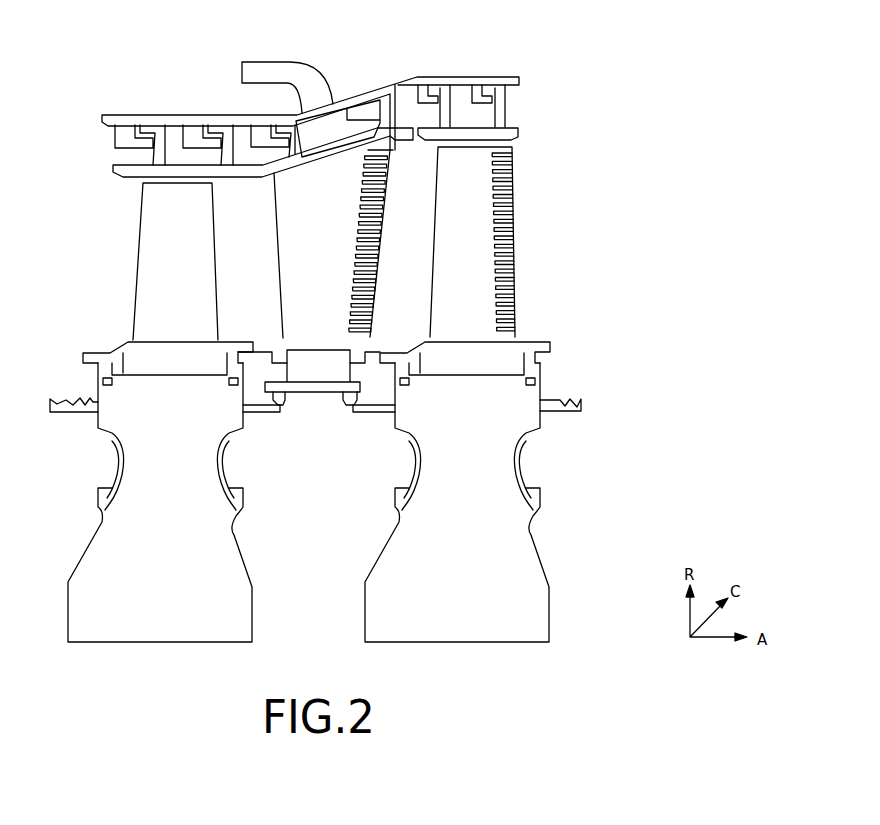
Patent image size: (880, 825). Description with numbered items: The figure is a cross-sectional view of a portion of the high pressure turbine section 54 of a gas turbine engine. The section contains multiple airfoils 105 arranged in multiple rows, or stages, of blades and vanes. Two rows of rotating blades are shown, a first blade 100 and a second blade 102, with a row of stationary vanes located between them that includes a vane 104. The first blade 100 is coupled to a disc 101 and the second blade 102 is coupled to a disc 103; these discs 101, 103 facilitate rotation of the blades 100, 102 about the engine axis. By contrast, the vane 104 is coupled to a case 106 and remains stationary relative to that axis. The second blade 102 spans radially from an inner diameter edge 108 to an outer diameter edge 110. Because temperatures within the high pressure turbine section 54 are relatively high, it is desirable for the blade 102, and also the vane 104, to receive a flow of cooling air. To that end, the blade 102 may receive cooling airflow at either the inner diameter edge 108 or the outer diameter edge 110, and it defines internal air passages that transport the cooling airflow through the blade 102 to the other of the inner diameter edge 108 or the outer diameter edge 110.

The high pressure turbine section 54 is at (582, 58).
The first blade 100 is at (140, 240).
The disc 101 is at (237, 570).
The second blade 102 is at (487, 190).
The disc 103 is at (542, 613).
The vane 104 is at (285, 250).
The airfoils 105 is at (101, 274).
The case 106 is at (387, 80).
The inner diameter edge 108 is at (480, 373).
The outer diameter edge 110 is at (485, 146).